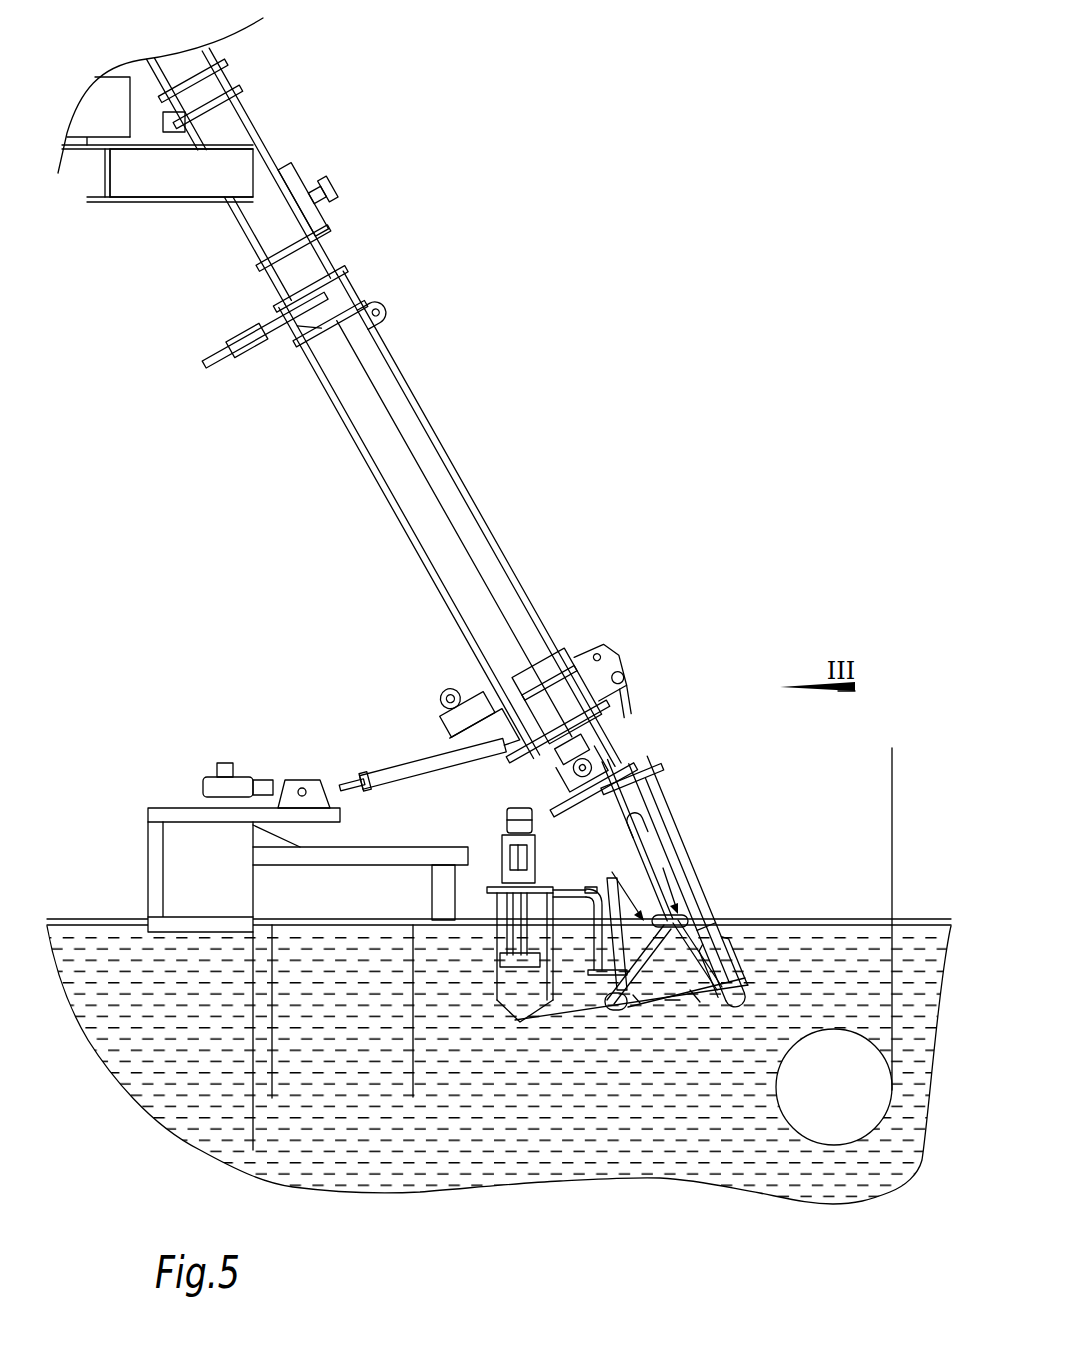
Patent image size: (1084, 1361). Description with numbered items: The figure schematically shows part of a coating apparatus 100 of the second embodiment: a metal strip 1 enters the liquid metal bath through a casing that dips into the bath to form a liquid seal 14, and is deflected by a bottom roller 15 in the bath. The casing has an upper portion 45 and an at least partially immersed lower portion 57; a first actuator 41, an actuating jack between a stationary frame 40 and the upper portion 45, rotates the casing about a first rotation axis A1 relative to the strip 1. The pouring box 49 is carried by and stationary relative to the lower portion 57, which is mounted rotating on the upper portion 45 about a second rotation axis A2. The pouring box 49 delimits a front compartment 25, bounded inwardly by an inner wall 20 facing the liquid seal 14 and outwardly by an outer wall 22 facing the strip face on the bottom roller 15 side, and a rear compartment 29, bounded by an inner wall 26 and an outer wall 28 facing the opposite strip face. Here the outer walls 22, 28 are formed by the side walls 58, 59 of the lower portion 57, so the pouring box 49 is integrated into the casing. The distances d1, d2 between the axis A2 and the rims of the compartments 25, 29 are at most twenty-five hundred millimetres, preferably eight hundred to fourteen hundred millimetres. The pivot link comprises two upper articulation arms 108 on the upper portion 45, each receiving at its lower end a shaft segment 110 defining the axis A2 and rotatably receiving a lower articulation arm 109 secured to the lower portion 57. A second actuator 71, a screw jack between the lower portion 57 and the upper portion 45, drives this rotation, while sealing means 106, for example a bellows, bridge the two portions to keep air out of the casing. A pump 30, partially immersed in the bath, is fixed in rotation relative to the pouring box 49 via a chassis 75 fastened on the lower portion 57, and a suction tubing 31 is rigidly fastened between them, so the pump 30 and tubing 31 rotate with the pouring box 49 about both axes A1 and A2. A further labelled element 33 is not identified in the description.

The metal strip 1 is at (412, 442).
The liquid seal 14 is at (665, 928).
The bottom roller 15 is at (855, 1113).
The inner wall 20 is at (694, 1003).
The outer wall 22 is at (715, 928).
The front compartment 25 is at (718, 942).
The inner wall 26 is at (636, 1003).
The outer wall 28 is at (602, 1000).
The rear compartment 29 is at (627, 1012).
The pump 30 is at (488, 832).
The suction tubing 31 is at (672, 1003).
The pump bottom plate 33 is at (553, 1020).
The stationary frame 40 is at (175, 865).
The first actuator 41 is at (405, 745).
The upper portion of the casing 45 is at (492, 490).
The pouring box 49 is at (605, 930).
The lower portion of the casing 57 is at (678, 832).
The side wall 58 is at (608, 878).
The side wall 59 is at (695, 857).
The second actuator 71 is at (636, 670).
The chassis 75 is at (600, 935).
The apparatus 100 is at (280, 590).
The sealing means 106 is at (568, 765).
The upper articulation arm 108 is at (566, 690).
The lower articulation arm 109 is at (645, 808).
The shaft segment 110 is at (572, 765).
The first rotation axis A1 is at (213, 128).
The second rotation axis A2 is at (627, 735).
The distance d1 is at (620, 882).
The distance d2 is at (660, 879).